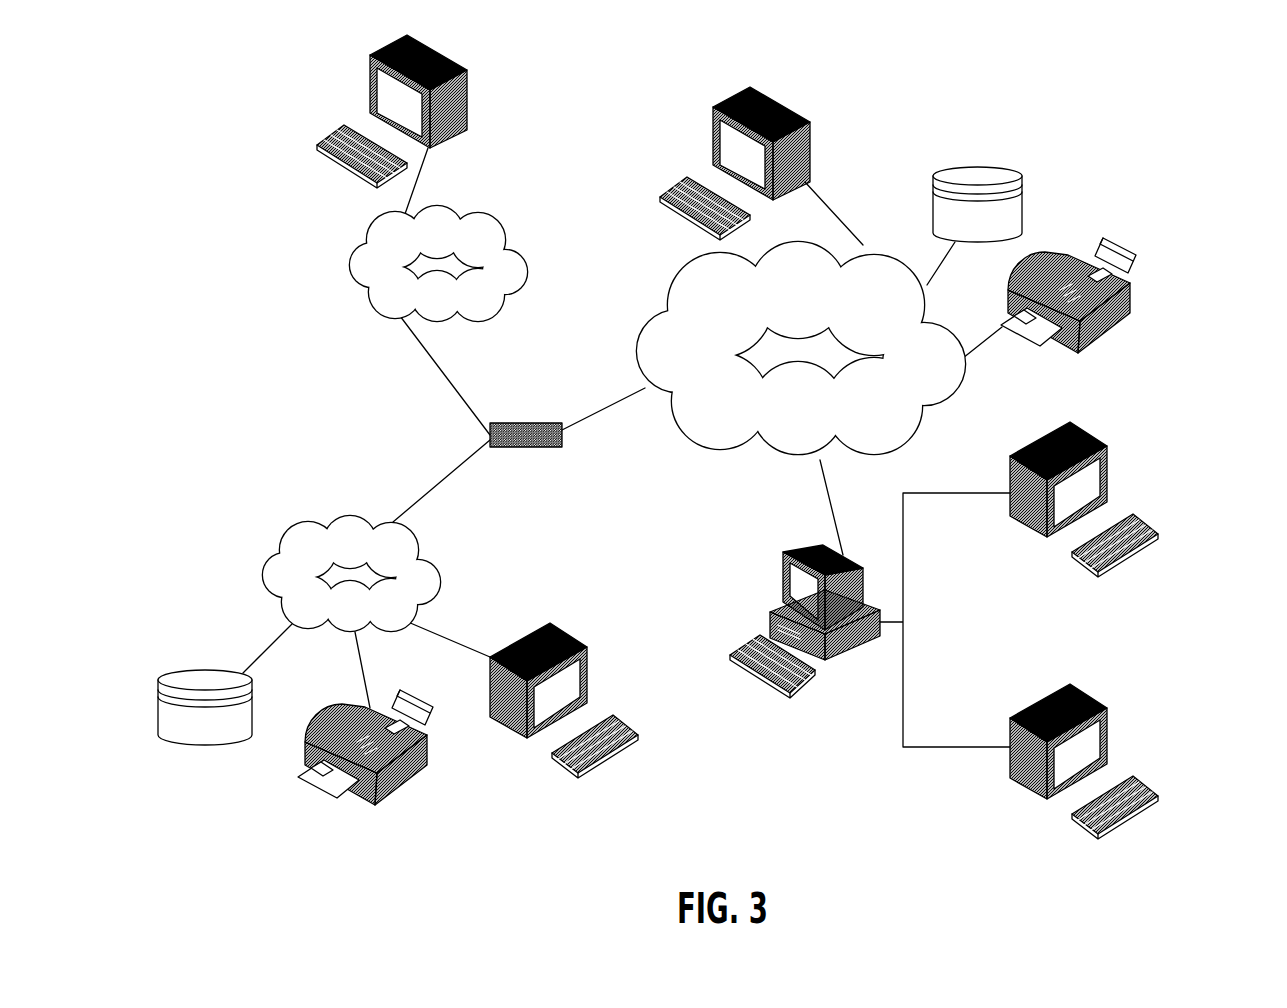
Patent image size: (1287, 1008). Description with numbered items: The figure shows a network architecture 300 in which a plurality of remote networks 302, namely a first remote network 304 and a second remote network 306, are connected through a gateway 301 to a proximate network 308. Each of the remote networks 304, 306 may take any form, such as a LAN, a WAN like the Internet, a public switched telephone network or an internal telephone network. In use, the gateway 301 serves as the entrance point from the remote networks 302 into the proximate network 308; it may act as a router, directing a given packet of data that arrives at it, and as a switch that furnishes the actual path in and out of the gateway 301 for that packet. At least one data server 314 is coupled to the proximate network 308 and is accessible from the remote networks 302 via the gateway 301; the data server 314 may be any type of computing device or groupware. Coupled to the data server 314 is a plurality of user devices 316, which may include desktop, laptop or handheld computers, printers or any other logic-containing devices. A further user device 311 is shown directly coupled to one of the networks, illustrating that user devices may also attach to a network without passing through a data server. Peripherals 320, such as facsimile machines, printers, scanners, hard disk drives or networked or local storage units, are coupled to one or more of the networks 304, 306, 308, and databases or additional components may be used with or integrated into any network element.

The network architecture 300 is at (1152, 78).
The gateway 301 is at (524, 422).
The remote networks 302 is at (333, 350).
The first remote network 304 is at (268, 547).
The second remote network 306 is at (526, 267).
The proximate network 308 is at (925, 413).
The user device 311 is at (808, 157).
The data server 314 is at (780, 577).
The user devices 316 is at (468, 102).
The peripheral 320 is at (977, 166).